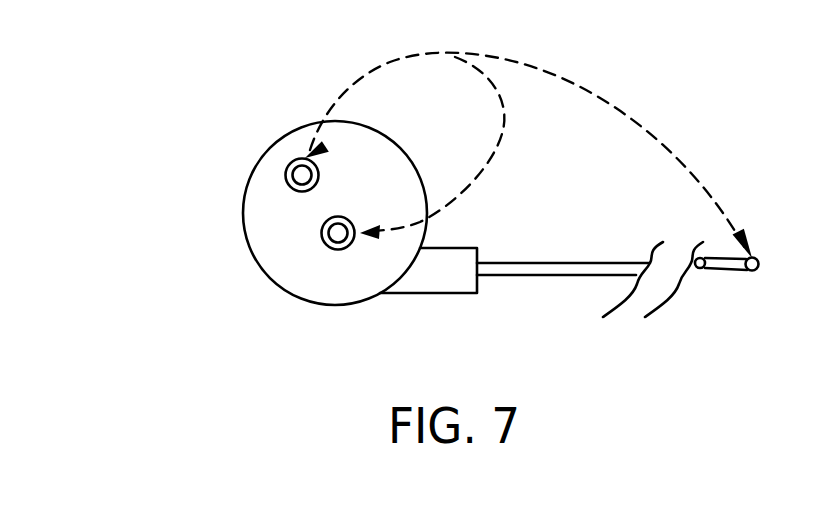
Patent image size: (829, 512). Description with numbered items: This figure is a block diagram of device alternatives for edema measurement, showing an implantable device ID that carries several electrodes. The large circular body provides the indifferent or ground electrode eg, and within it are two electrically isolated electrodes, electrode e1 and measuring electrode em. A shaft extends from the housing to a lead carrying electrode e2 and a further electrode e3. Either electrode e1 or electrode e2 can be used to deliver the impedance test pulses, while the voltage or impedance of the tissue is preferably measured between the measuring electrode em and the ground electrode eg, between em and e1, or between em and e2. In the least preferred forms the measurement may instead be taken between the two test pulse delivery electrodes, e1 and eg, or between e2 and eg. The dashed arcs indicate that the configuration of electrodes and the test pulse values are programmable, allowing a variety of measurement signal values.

The implantable device ID is at (240, 124).
The electrode e1 is at (285, 176).
The measuring electrode em is at (322, 240).
The ground electrode eg is at (362, 284).
The electrode e2 is at (752, 271).
The third electrode e3 is at (697, 268).